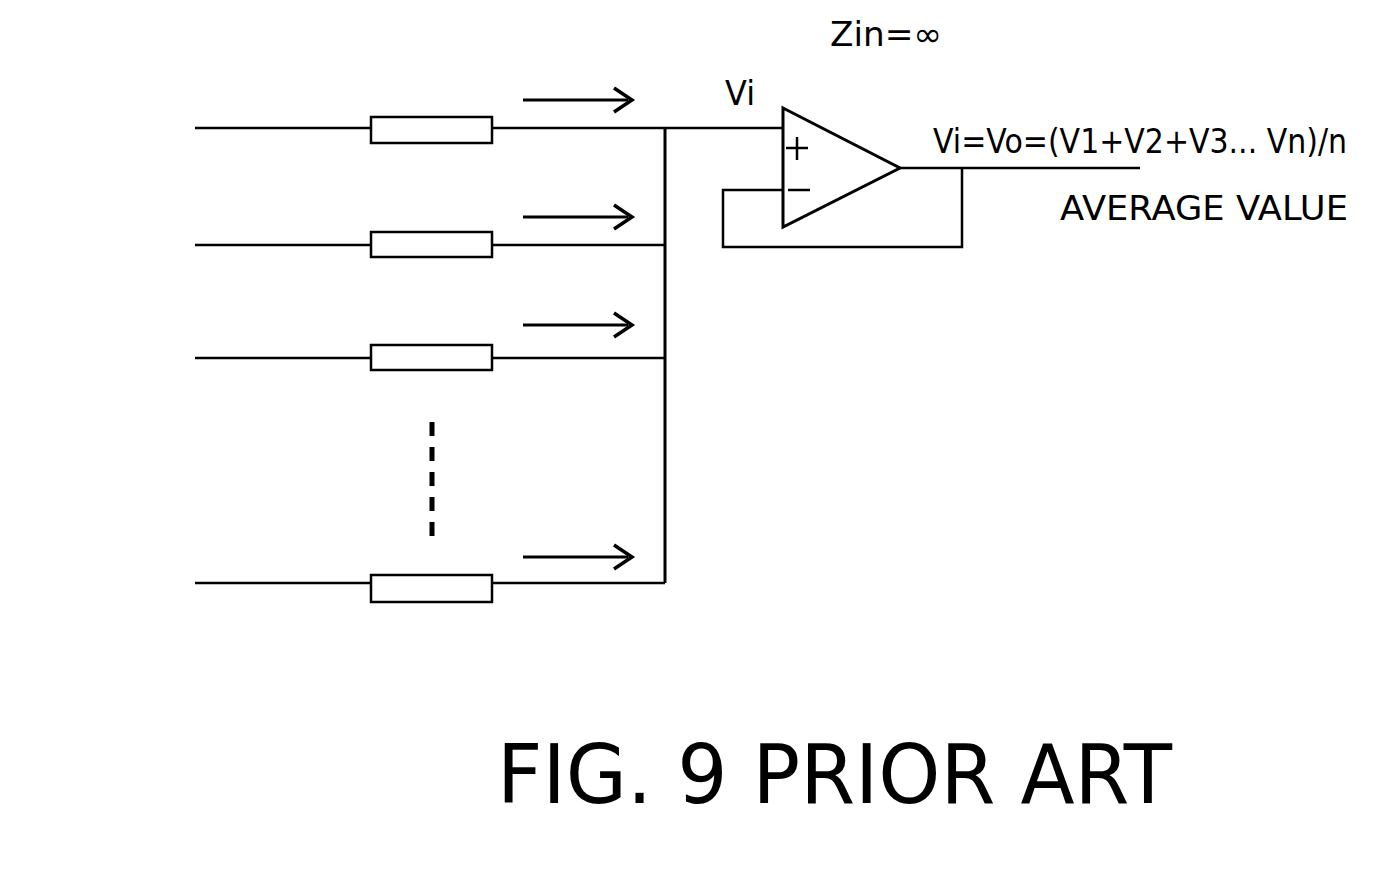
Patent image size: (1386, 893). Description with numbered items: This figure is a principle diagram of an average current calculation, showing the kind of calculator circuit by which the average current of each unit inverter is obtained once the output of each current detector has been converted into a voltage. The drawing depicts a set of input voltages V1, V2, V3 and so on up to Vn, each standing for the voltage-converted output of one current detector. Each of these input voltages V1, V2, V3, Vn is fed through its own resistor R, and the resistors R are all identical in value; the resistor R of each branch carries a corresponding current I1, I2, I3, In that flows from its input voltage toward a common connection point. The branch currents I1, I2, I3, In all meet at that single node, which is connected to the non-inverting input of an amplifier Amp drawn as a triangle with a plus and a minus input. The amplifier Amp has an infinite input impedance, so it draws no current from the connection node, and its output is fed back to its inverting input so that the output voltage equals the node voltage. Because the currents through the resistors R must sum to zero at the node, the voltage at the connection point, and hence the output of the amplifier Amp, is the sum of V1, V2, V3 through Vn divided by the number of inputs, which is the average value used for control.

The resistor R is at (431, 379).
The operational amplifier Amp is at (931, 204).
The input voltage 1 V1 is at (463, 123).
The input voltage 2 V2 is at (404, 240).
The input voltage 3 V3 is at (404, 353).
The input voltage n Vn is at (404, 578).
The current 1 I1 is at (577, 84).
The current 2 I2 is at (577, 203).
The current 3 I3 is at (577, 310).
The current n In is at (577, 542).